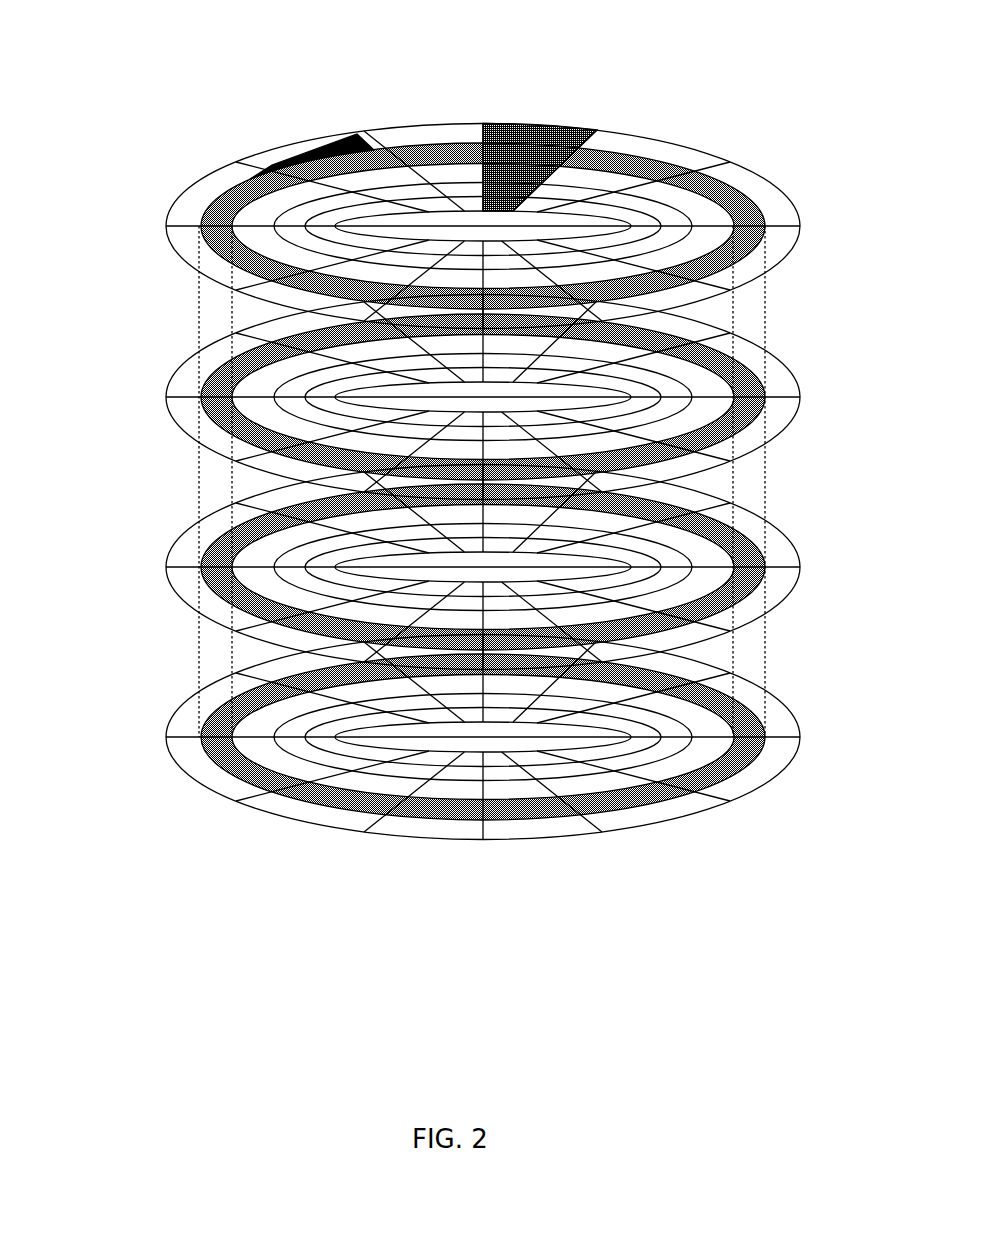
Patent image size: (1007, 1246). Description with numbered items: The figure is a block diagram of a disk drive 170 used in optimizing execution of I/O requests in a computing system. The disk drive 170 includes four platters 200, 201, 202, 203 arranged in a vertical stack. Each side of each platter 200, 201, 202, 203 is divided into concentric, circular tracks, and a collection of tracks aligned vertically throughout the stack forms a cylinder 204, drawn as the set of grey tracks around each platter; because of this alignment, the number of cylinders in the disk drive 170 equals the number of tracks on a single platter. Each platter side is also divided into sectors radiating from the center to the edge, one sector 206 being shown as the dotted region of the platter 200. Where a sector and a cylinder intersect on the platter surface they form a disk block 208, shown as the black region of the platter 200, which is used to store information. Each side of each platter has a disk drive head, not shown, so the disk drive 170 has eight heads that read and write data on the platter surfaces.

The disk drive 170 is at (178, 68).
The platter 200 is at (418, 208).
The platter 201 is at (126, 397).
The platter 202 is at (126, 567).
The platter 203 is at (126, 737).
The cylinder 204 is at (778, 314).
The sector 206 is at (609, 109).
The disk block 208 is at (321, 133).